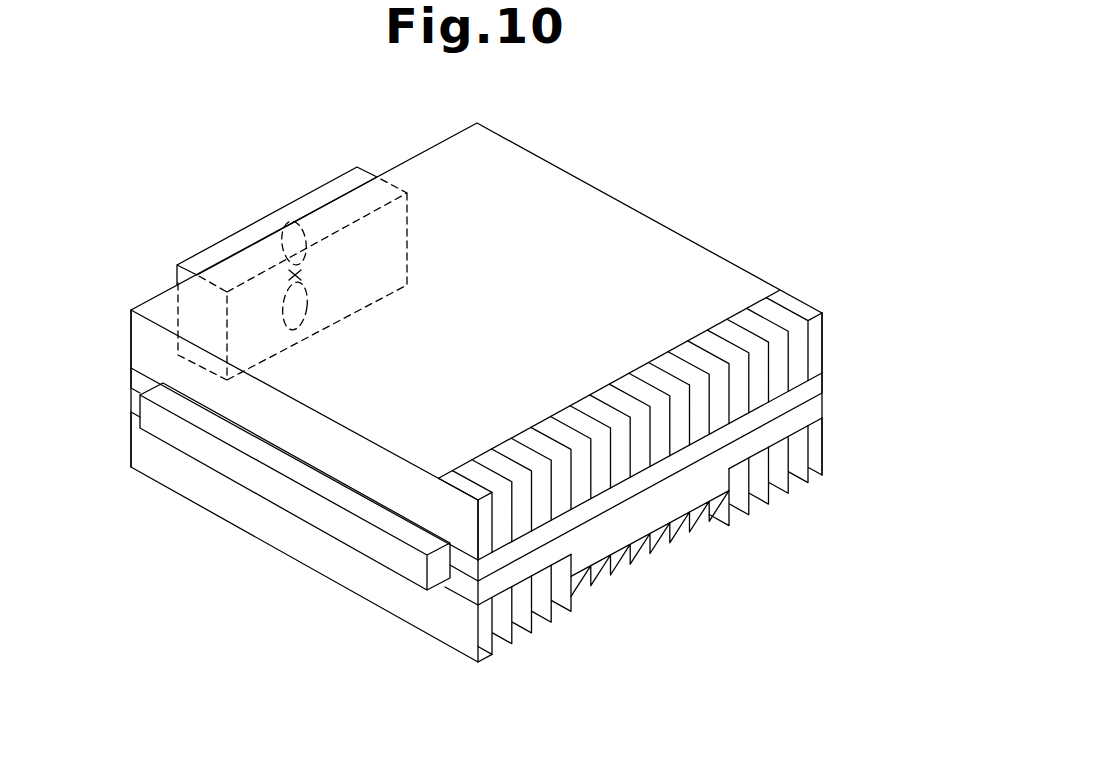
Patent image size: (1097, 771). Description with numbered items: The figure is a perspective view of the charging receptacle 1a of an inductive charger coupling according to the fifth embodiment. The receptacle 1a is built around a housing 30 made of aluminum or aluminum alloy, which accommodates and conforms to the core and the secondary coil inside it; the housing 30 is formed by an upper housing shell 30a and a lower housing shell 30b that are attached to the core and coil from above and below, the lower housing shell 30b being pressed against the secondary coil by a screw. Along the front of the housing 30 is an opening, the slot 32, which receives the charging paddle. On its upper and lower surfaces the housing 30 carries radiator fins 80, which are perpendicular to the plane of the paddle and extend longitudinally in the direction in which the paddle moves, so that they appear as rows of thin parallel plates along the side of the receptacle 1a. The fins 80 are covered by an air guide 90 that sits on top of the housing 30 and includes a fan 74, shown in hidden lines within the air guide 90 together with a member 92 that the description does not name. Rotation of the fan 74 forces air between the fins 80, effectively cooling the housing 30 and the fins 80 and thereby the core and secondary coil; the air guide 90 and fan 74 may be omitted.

The receptacle 1a is at (718, 188).
The air guide 90 is at (587, 204).
The bar / duct member 92 is at (365, 176).
The fan 74 is at (306, 274).
The radiator fins 80 is at (814, 313).
The housing 30 is at (476, 549).
The upper housing shell 30a is at (518, 553).
The lower housing shell 30b is at (547, 557).
The slot 32 is at (160, 427).